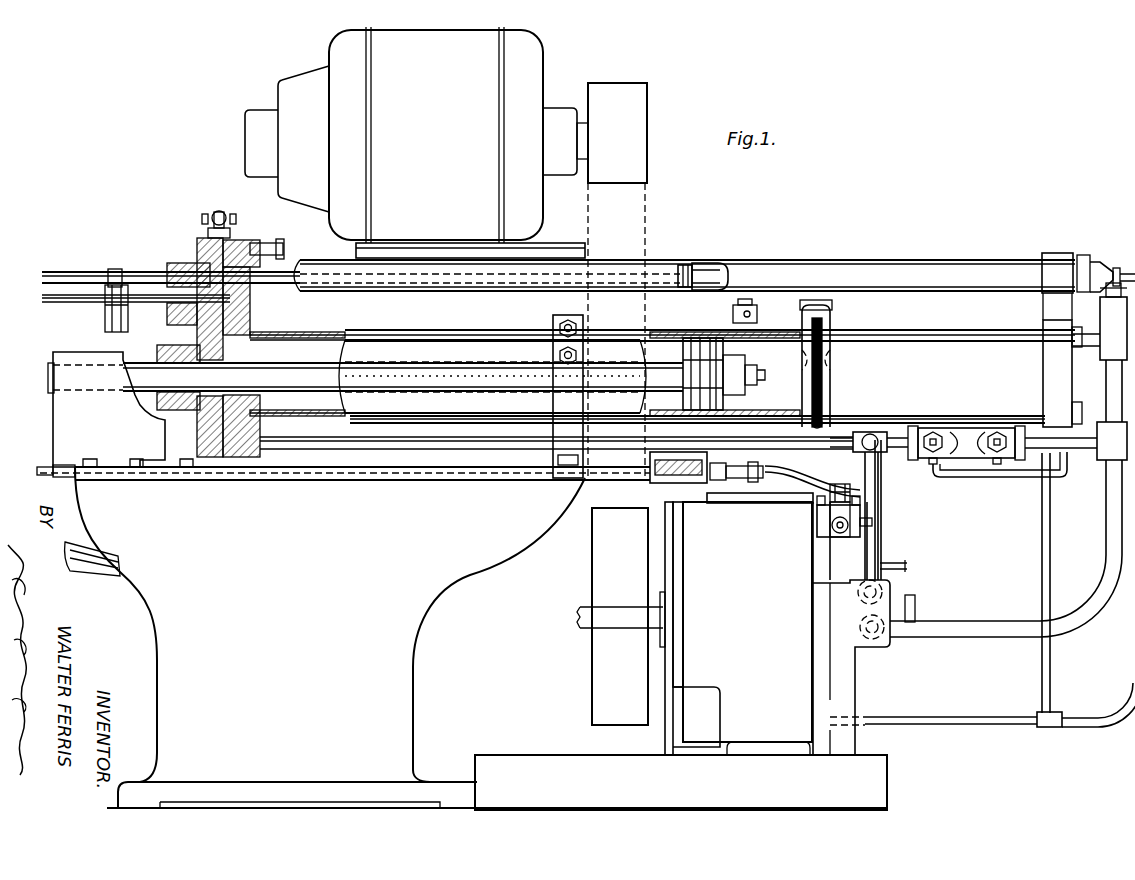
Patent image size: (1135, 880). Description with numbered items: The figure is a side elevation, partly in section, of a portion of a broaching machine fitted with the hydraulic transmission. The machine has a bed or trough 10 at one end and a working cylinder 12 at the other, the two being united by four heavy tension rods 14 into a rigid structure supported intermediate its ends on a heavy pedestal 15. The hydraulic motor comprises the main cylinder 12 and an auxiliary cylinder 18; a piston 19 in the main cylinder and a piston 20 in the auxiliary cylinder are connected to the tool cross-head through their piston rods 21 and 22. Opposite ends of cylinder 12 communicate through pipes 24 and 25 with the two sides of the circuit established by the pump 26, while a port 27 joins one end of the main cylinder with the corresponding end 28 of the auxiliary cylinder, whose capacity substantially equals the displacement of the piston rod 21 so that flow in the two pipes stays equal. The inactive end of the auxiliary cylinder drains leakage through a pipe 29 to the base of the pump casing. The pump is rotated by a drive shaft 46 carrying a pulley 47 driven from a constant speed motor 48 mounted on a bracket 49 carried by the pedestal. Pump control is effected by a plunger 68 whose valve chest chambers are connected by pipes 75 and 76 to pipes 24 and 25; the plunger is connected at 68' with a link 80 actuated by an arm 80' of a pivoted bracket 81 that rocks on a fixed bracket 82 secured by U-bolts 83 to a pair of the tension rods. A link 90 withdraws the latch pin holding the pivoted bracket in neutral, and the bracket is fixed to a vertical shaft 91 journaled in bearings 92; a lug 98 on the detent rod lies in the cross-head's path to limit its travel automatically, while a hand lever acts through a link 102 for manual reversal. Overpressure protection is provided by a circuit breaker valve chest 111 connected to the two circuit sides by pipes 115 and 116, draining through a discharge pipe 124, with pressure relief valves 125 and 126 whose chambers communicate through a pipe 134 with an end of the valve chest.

The bed or trough 10 is at (60, 418).
The working cylinder 12 is at (812, 305).
The tension rods 14 is at (452, 334).
The pedestal 15 is at (398, 648).
The auxiliary cylinder 18 is at (716, 270).
The piston 19 is at (705, 355).
The piston 20 is at (687, 265).
The main piston rod 21 is at (292, 385).
The piston rod 22 is at (291, 268).
The pipe 24 is at (317, 470).
The pipe 25 is at (1088, 626).
The pump 26 is at (738, 628).
The port 27 is at (230, 325).
The end of cylinder 28 is at (295, 300).
The pipe 29 is at (1127, 372).
The drive shaft 46 is at (650, 625).
The pulley 47 is at (602, 570).
The constant speed motor 48 is at (416, 135).
The bracket 49 is at (568, 247).
The plunger 68 is at (838, 536).
The connection 68' is at (876, 493).
The pipe 75 is at (882, 518).
The pipe 76 is at (817, 504).
The link 80 is at (879, 516).
The arm 80' is at (812, 474).
The pivoted bracket 81 is at (730, 503).
The fixed bracket 82 is at (828, 303).
The U-bolts 83 is at (827, 322).
The link 90 is at (40, 467).
The vertical shaft 91 is at (757, 355).
The bearings 92 is at (733, 313).
The lug 98 is at (105, 318).
The link 102 is at (62, 468).
The valve chest 111 is at (955, 463).
The pipe 115 is at (868, 432).
The pipe 116 is at (1088, 452).
The discharge pipe 124 is at (1042, 558).
The pressure relief valve 125 is at (937, 432).
The pressure relief valve 126 is at (1000, 432).
The pipe 134 is at (1010, 477).